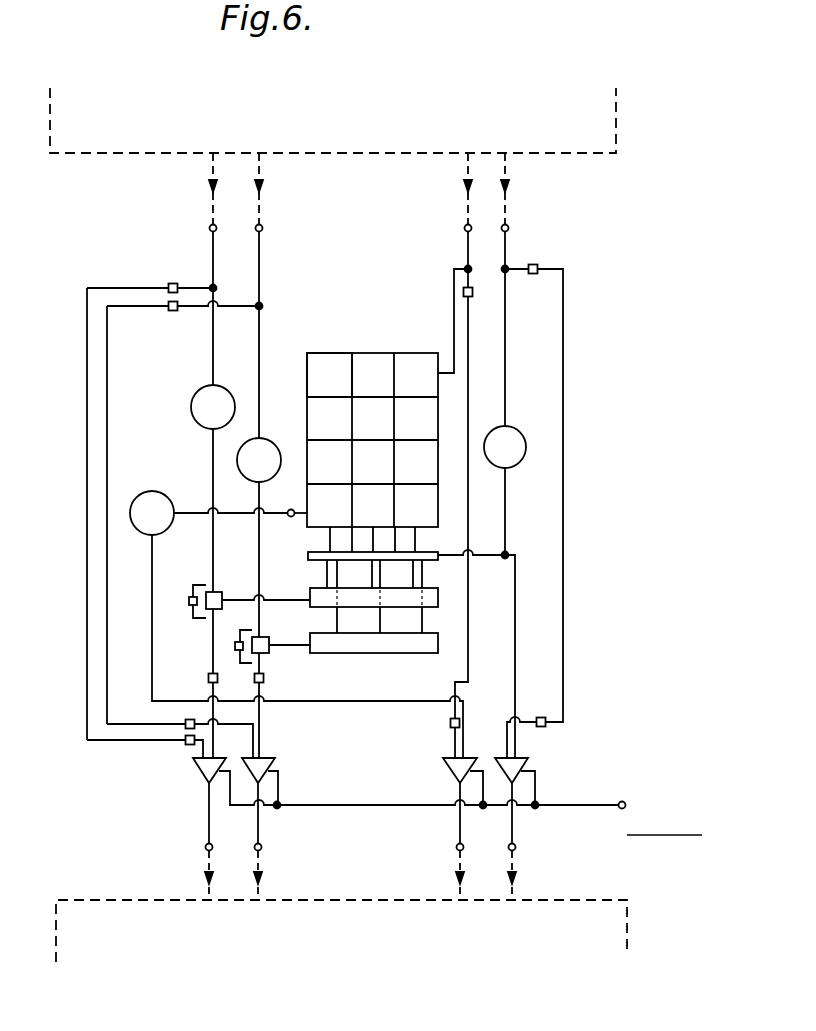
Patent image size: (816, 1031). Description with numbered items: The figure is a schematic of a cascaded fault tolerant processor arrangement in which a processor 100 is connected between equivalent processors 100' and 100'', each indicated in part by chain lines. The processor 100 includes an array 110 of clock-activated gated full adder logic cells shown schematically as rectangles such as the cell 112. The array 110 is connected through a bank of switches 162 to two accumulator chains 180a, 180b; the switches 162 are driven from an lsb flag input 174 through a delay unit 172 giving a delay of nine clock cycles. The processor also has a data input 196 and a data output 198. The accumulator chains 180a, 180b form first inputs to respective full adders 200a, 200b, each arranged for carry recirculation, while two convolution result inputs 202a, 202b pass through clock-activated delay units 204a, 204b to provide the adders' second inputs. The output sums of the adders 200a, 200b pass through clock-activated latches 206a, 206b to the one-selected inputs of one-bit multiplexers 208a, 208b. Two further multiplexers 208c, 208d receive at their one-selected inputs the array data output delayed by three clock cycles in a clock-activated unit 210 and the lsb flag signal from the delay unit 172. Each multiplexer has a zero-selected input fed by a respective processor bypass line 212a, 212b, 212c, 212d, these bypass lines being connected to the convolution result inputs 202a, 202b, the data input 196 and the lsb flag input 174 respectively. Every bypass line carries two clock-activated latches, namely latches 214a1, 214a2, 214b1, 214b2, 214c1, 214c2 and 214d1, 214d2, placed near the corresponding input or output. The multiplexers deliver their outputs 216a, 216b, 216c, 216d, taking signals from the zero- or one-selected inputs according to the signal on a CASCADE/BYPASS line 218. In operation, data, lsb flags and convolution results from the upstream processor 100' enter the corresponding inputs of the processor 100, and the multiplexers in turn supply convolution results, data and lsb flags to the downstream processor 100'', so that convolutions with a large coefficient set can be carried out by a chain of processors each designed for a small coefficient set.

The processor 100 is at (361, 526).
The equivalent processor 100' is at (369, 120).
The equivalent processor 100'' is at (377, 931).
The array 110 is at (370, 355).
The gated full adder logic cell 112 is at (325, 358).
The bank of switches 162 is at (318, 558).
The delay unit 172 is at (513, 468).
The lsb flag input 174 is at (509, 227).
The accumulator chain 180a is at (319, 602).
The accumulator chain 180b is at (360, 653).
The data input 196 is at (463, 229).
The data output 198 is at (291, 517).
The full adder 200a is at (221, 592).
The full adder 200b is at (271, 650).
The convolution result input 202a is at (209, 229).
The convolution result input 202b is at (263, 229).
The clock-activated delay unit 204a is at (194, 416).
The clock-activated delay unit 204b is at (237, 459).
The clock-activated latch 206a is at (212, 673).
The clock-activated latch 206b is at (267, 682).
The one-bit multiplexer 208a is at (227, 758).
The one-bit multiplexer 208b is at (275, 763).
The one-bit multiplexer 208c is at (452, 767).
The one-bit multiplexer 208d is at (529, 762).
The clock-activated unit 210 is at (143, 533).
The processor bypass line 212a is at (86, 363).
The processor bypass line 212b is at (107, 363).
The processor bypass line 212c is at (472, 658).
The processor bypass line 212d is at (566, 625).
The clock-activated latch 214a1 is at (169, 283).
The clock-activated latch 214a2 is at (189, 745).
The clock-activated latch 214b1 is at (168, 307).
The clock-activated latch 214b2 is at (186, 729).
The clock-activated latch 214c1 is at (462, 288).
The clock-activated latch 214c2 is at (450, 724).
The clock-activated latch 214d1 is at (540, 265).
The clock-activated latch 214d2 is at (547, 724).
The multiplexer output 216a is at (206, 849).
The multiplexer output 216b is at (261, 850).
The multiplexer output 216c is at (457, 849).
The multiplexer output 216d is at (515, 851).
The CASCADE/BYPASS line 218 is at (593, 800).